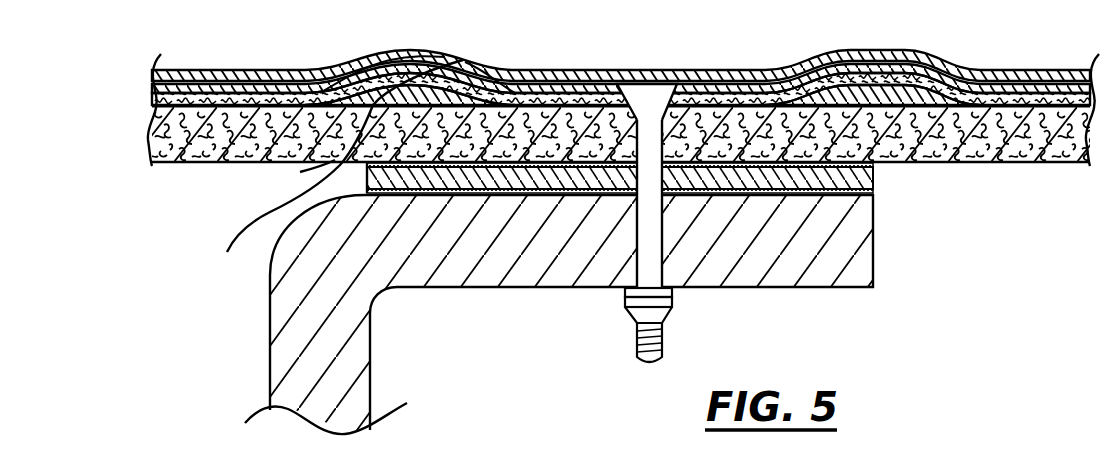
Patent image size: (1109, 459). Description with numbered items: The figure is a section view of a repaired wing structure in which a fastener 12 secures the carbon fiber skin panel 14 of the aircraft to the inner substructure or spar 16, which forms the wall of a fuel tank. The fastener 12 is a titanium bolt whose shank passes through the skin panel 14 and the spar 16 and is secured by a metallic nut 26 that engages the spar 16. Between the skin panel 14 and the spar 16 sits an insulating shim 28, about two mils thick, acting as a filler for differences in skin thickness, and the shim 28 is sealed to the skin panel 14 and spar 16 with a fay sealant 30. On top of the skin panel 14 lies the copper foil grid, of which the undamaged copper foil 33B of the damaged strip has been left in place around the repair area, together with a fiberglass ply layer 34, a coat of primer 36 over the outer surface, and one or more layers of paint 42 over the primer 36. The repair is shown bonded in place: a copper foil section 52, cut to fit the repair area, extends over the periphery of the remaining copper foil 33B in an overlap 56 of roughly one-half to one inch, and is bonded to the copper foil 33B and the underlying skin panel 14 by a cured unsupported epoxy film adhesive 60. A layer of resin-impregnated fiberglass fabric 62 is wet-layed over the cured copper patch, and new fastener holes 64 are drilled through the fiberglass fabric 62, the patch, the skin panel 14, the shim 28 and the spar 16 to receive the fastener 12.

The fastener 12 is at (643, 140).
The skin panel 14 is at (155, 128).
The spar 16 is at (277, 367).
The nut 26 is at (623, 308).
The shim 28 is at (877, 179).
The fay sealant 30 is at (877, 167).
The undamaged copper foil 33B is at (300, 172).
The fiberglass ply layer 34 is at (158, 106).
The primer 36 is at (150, 83).
The layers of paint 42 is at (149, 75).
The copper foil section 52 is at (463, 80).
The overlap 56 is at (443, 77).
The epoxy film adhesive 60 is at (335, 174).
The resin-impregnated fiberglass fabric 62 is at (502, 87).
The fastener holes 64 is at (662, 233).